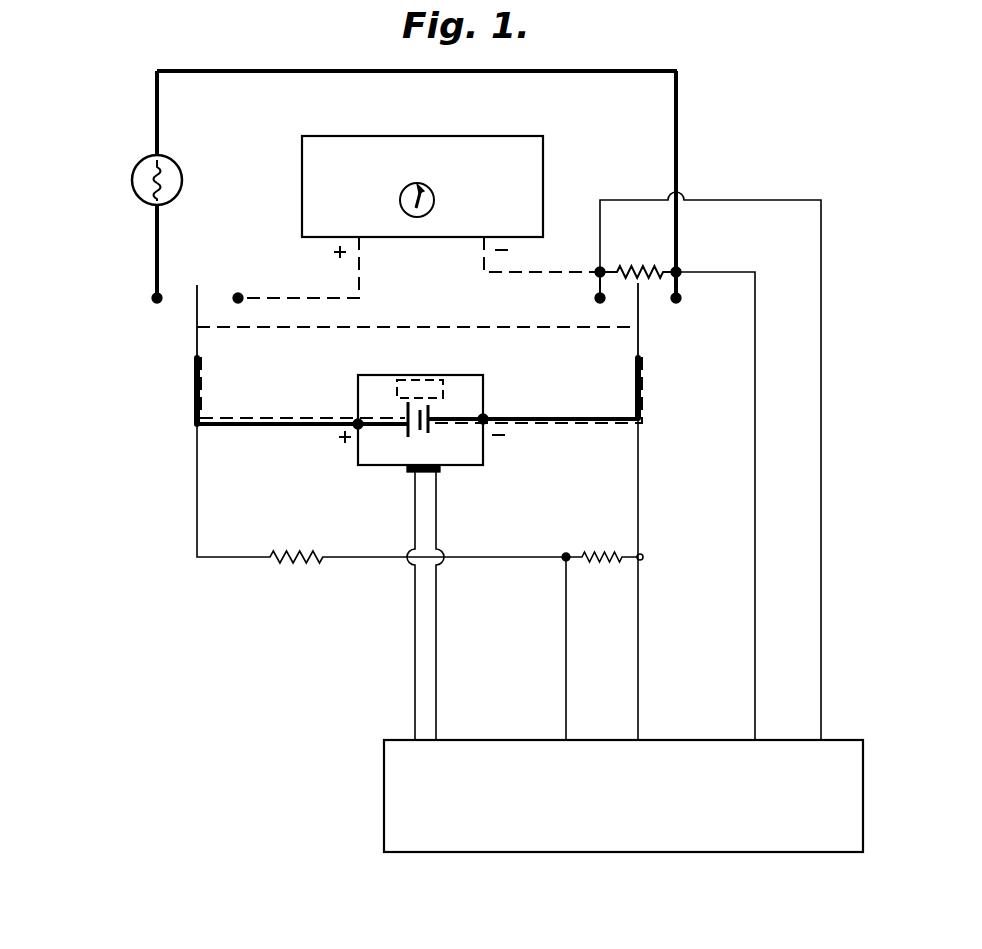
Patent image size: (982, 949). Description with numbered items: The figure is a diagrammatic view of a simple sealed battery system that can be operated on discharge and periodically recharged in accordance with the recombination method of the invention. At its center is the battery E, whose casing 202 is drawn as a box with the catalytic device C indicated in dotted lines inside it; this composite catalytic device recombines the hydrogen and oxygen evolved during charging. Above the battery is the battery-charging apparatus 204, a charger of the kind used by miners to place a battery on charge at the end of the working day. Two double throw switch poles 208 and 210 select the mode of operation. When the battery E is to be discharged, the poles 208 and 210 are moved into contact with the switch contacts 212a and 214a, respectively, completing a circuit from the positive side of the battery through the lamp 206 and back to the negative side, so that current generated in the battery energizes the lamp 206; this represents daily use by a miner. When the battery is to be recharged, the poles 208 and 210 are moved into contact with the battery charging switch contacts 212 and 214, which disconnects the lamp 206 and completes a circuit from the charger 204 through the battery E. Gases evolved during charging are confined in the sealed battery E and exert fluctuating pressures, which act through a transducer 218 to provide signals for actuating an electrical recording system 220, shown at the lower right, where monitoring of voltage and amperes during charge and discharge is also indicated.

The battery casing 202 is at (465, 397).
The battery-charging apparatus 204 is at (527, 168).
The lamp 206 is at (168, 177).
The double throw switch pole 208 is at (195, 310).
The double throw switch pole 210 is at (637, 305).
The battery charging switch contact 212 is at (242, 296).
The switch contact 212a is at (152, 302).
The battery charging switch contact 214 is at (681, 296).
The switch contact 214a is at (595, 298).
The transducer 218 is at (437, 470).
The electrical recording system 220 is at (668, 842).
The catalytic device C is at (390, 372).
The battery E is at (450, 375).